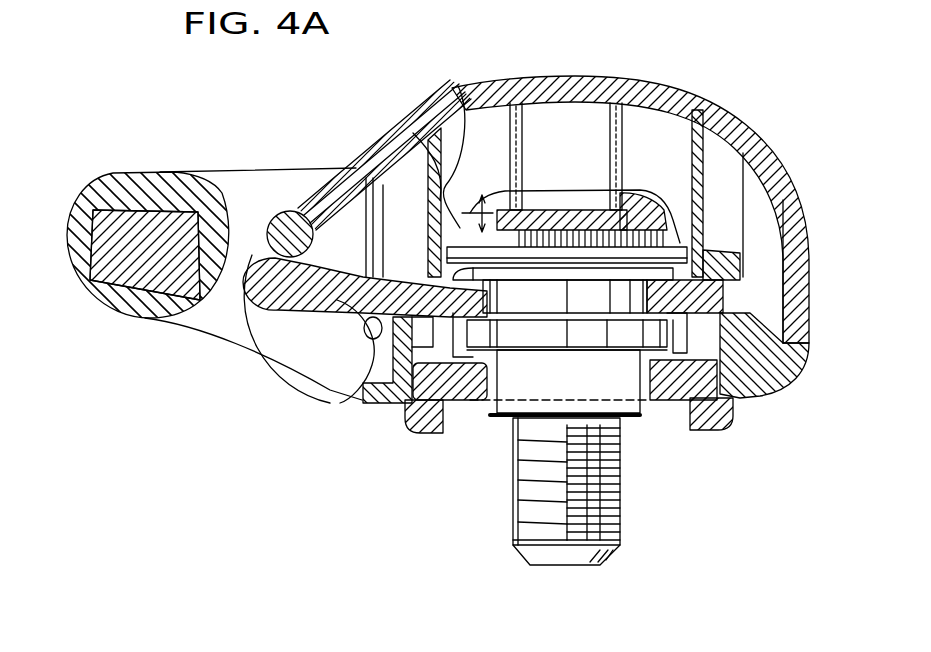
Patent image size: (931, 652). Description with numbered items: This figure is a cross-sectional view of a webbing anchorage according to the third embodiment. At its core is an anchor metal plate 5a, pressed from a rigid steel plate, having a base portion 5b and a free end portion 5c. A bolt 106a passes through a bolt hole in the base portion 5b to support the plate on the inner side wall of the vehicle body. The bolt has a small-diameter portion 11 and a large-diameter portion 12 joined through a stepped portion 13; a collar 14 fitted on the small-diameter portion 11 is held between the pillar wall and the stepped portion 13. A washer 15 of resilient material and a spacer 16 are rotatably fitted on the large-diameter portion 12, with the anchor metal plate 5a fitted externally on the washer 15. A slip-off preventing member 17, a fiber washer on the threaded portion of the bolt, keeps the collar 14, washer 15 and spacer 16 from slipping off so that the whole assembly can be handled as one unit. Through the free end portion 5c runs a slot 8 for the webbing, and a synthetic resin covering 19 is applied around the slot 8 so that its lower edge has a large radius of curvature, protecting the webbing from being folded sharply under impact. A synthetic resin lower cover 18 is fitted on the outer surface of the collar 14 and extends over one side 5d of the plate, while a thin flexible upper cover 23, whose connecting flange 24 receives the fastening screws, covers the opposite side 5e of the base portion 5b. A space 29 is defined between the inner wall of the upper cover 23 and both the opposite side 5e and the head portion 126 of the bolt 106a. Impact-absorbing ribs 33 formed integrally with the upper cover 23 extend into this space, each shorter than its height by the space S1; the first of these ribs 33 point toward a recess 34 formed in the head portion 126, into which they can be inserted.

The anchor metal plate 5a is at (323, 367).
The base portion 5b is at (680, 320).
The free end portion 5c is at (150, 307).
The one side 5d is at (362, 380).
The opposite side 5e is at (300, 205).
The slot 8 is at (230, 300).
The small-diameter portion 11 is at (513, 520).
The large-diameter portion 12 is at (421, 250).
The stepped portion 13 is at (467, 420).
The collar 14 is at (540, 390).
The washer 15 is at (593, 295).
The spacer 16 is at (545, 322).
The slip-off preventing member 17 is at (618, 345).
The lower cover 18 is at (790, 371).
The covering 19 is at (100, 277).
The upper cover 23 is at (603, 77).
The connecting flange 24 is at (809, 293).
The space 29 is at (655, 118).
The ribs 33 is at (462, 80).
The recess 34 is at (540, 200).
The head portion 126 is at (656, 200).
The bolt 106a is at (577, 533).
The space S1 is at (413, 133).